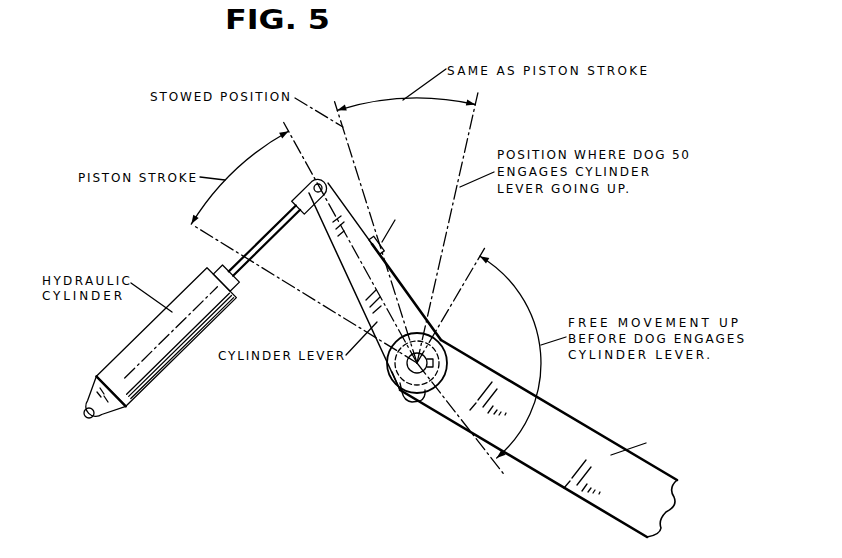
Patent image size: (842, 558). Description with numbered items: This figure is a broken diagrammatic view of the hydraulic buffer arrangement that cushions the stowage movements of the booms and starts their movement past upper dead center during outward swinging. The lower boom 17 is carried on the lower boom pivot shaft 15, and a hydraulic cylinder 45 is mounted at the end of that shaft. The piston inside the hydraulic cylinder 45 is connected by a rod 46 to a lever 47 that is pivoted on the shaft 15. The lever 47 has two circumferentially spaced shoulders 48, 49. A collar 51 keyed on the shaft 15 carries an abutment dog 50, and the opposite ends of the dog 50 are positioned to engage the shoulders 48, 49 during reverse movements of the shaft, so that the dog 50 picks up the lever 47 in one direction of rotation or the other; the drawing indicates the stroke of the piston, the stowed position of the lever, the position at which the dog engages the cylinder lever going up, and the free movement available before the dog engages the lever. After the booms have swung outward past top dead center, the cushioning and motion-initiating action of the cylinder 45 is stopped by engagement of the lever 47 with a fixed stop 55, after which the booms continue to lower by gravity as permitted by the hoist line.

The hydraulic cylinder 45 is at (125, 361).
The rod 46 is at (271, 231).
The lever 47 is at (345, 262).
The fixed stop 55 is at (390, 250).
The shoulder 48 is at (443, 342).
The collar 51 is at (390, 363).
The lower boom pivot shaft 15 is at (410, 373).
The abutment dog 50 is at (418, 403).
The shoulder 49 is at (399, 392).
The lower boom 17 is at (659, 470).